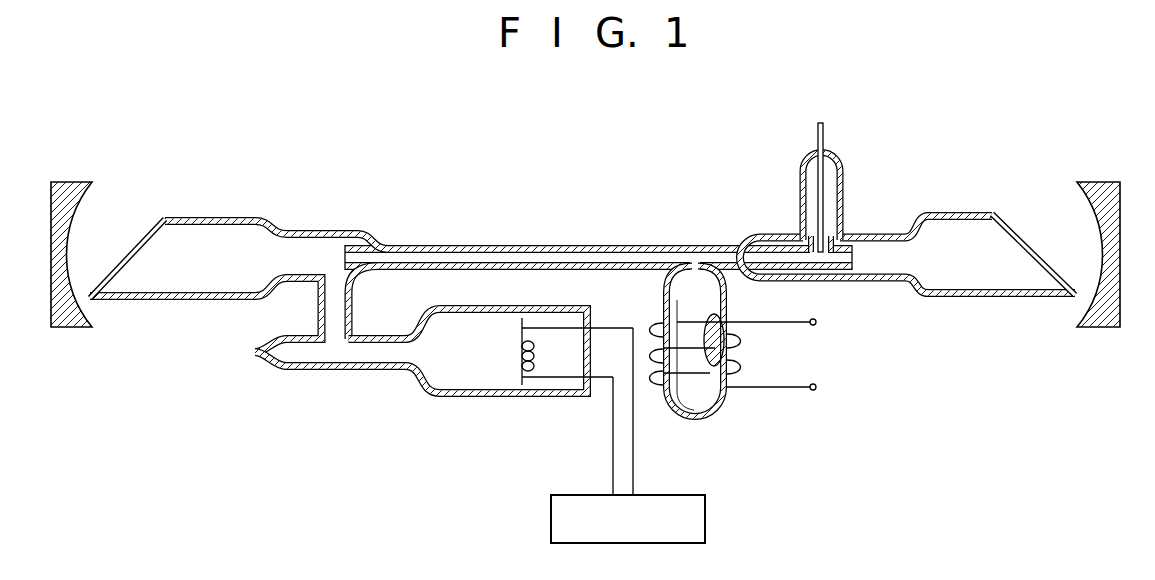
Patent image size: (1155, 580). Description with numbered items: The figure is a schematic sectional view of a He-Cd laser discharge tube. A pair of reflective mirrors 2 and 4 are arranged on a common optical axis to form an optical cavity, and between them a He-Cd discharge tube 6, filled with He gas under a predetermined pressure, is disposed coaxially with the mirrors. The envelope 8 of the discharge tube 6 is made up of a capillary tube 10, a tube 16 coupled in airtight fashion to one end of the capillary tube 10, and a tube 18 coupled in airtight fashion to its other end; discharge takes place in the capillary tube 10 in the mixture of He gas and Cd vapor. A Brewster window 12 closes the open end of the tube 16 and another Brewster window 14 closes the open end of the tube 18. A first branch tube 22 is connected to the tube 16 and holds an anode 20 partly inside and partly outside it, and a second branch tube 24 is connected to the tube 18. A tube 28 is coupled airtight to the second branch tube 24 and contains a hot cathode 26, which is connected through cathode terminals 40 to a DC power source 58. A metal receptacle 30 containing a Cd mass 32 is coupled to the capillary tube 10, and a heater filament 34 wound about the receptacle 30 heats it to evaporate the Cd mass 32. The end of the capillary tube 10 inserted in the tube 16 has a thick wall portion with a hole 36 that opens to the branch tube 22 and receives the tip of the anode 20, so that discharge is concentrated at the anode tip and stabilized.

The reflective mirror 2 is at (1093, 182).
The reflective mirror 4 is at (72, 185).
The He-Cd discharge tube 6 is at (582, 280).
The envelope 8 is at (607, 240).
The capillary tube 10 is at (481, 245).
The Brewster window 12 is at (1029, 250).
The Brewster window 14 is at (146, 244).
The tube 16 is at (918, 218).
The tube 18 is at (262, 216).
The anode 20 is at (824, 132).
The first branch tube 22 is at (844, 172).
The second branch tube 24 is at (355, 300).
The hot cathode 26 is at (520, 345).
The tube 28 is at (441, 397).
The metal receptacle 30 is at (709, 412).
The Cd mass 32 is at (732, 352).
The heater filament 34 is at (660, 338).
The hole 36 is at (821, 255).
The cathode terminals 40 is at (549, 383).
The DC power source 58 is at (707, 517).